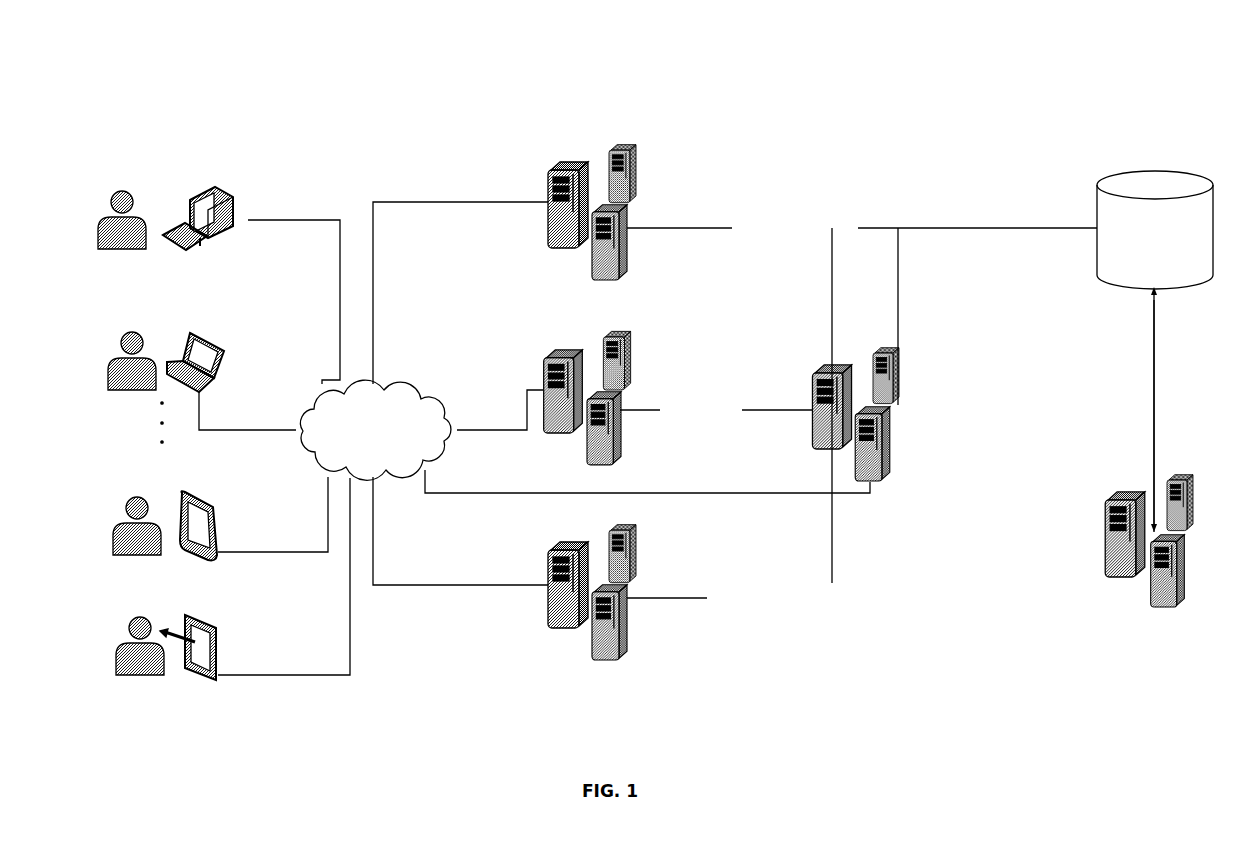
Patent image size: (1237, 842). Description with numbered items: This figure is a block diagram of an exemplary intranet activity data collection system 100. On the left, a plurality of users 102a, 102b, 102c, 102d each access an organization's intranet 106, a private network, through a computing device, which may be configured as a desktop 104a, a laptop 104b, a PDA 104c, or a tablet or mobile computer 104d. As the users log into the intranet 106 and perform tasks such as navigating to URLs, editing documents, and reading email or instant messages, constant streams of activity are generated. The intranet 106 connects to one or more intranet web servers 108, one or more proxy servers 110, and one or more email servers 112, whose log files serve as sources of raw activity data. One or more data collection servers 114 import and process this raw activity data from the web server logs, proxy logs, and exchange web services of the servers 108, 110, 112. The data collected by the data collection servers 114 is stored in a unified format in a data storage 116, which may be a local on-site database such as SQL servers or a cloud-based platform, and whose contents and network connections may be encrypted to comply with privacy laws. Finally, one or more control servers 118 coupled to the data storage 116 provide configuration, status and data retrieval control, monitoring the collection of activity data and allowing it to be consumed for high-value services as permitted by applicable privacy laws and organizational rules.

The intranet activity data collection system 100 is at (1048, 64).
The user 102a is at (97, 241).
The user 102b is at (107, 386).
The user 102c is at (115, 546).
The user 102d is at (117, 668).
The desktop 104a is at (230, 233).
The laptop 104b is at (228, 366).
The PDA 104c is at (218, 522).
The tablet or mobile computer 104d is at (218, 637).
The intranet 106 is at (402, 393).
The intranet web servers 108 is at (627, 207).
The proxy servers 110 is at (622, 395).
The email servers 112 is at (627, 590).
The data collection servers 114 is at (890, 445).
The data storage 116 is at (1118, 173).
The control servers 118 is at (1120, 490).